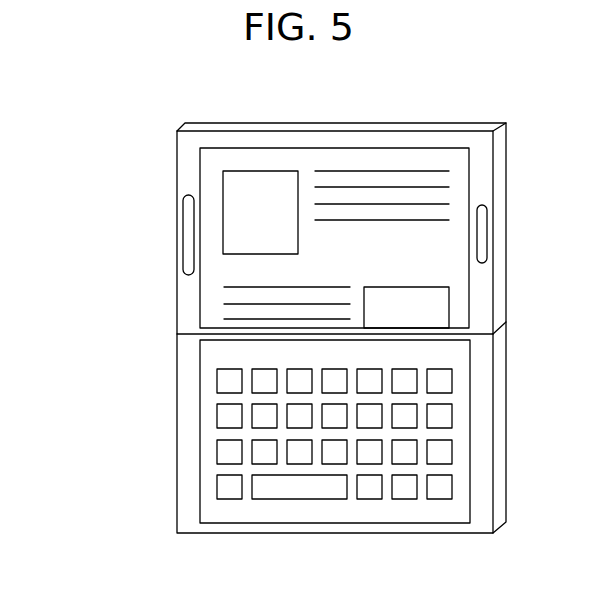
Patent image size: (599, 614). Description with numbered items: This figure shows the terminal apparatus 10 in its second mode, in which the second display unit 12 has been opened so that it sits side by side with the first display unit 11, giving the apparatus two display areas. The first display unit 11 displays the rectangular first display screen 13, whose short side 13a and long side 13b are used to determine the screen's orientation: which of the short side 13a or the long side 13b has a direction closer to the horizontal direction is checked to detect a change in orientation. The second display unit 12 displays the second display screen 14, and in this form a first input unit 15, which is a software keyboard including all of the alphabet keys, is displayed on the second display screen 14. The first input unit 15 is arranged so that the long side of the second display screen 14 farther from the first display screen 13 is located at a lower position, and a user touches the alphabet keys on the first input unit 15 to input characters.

The terminal apparatus 10 is at (72, 118).
The first display unit 11 is at (177, 180).
The second display unit 12 is at (177, 417).
The first display screen 13 is at (294, 210).
The short side 13a is at (200, 297).
The long side 13b is at (258, 148).
The second display screen 14 is at (435, 523).
The first input unit 15 is at (465, 430).